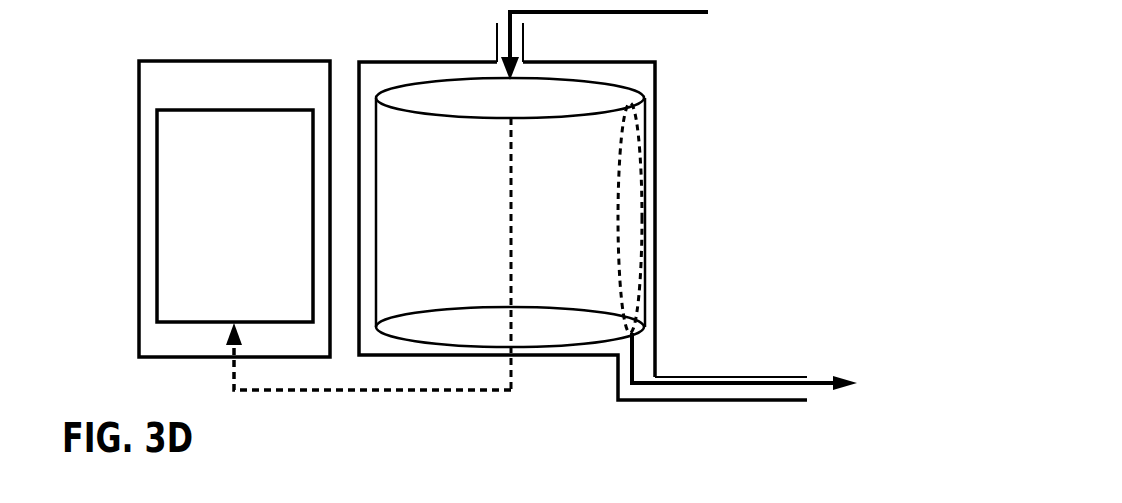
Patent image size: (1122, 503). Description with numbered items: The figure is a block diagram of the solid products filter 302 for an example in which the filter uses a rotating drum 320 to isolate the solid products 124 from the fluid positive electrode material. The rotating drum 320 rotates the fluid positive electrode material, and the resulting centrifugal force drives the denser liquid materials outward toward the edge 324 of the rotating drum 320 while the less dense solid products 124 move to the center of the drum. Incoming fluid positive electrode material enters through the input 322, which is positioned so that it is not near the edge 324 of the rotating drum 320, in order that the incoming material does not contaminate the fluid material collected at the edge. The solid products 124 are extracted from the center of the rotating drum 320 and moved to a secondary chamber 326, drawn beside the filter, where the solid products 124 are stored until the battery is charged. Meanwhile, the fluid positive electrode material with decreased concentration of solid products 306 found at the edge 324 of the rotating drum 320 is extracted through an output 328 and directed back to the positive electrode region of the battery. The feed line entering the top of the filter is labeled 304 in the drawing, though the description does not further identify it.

The solid products 124 is at (250, 253).
The solid products filter 302 is at (728, 132).
The feed stream inlet 304 is at (655, 13).
The fluid positive electrode material with decreased concentration of solid products 306 is at (813, 377).
The rotating drum 320 is at (560, 80).
The input 322 is at (497, 47).
The edge of the rotating drum 324 is at (643, 310).
The secondary chamber 326 is at (191, 61).
The output 328 is at (657, 377).